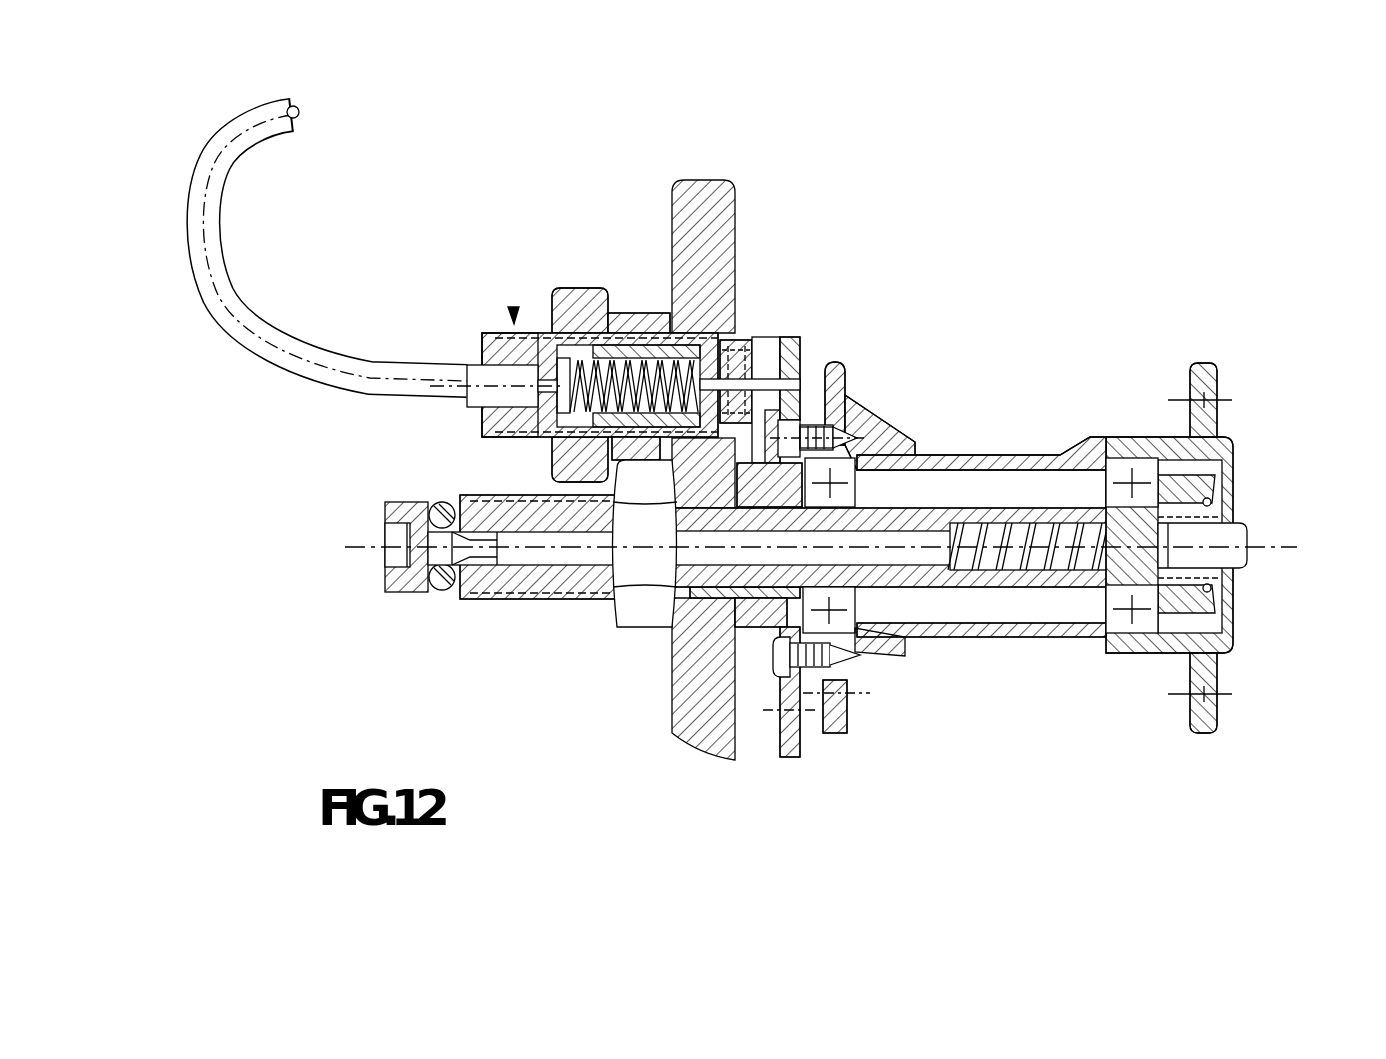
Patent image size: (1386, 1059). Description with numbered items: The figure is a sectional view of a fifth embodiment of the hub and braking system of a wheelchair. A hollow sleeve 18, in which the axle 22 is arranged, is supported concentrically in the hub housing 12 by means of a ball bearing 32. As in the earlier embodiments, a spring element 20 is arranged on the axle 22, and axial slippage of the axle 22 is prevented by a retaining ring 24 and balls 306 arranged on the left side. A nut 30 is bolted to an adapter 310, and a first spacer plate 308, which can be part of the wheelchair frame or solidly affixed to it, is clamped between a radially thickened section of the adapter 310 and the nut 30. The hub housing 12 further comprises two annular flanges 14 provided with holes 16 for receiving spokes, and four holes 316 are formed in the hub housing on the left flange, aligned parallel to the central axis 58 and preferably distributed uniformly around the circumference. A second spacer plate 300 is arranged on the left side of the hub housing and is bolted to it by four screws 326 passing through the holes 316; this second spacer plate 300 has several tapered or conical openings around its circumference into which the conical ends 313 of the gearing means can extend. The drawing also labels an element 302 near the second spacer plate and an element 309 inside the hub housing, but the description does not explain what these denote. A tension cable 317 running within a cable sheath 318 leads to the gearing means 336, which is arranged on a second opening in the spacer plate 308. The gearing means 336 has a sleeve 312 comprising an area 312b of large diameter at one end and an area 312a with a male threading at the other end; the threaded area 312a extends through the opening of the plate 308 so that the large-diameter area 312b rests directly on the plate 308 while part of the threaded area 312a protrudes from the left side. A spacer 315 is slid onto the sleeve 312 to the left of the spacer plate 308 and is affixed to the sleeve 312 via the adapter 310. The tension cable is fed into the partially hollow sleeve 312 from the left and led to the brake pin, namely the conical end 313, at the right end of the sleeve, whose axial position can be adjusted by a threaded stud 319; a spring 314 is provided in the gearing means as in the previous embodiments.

The hub housing 12 is at (1033, 457).
The annular flange 14 is at (1200, 366).
The hole 16 is at (842, 403).
The hollow sleeve 18 is at (1070, 575).
The spring element 20 is at (1023, 557).
The axle 22 is at (887, 553).
The retaining ring 24 is at (410, 568).
The nut 30 is at (642, 622).
The ball bearing 32 is at (1148, 470).
The central axis 58 is at (1263, 545).
The second spacer plate 300 is at (790, 757).
The mounting plate 302 is at (785, 717).
The ball 306 is at (437, 510).
The first spacer plate 308 is at (690, 718).
The spring 309 is at (1203, 483).
The adapter 310 is at (580, 293).
The sleeve 312 is at (742, 338).
The male-threaded area 312a is at (505, 330).
The large-diameter area 312b is at (750, 342).
The conical end 313 is at (785, 345).
The spring 314 is at (647, 360).
The spacer 315 is at (623, 320).
The hole 316 is at (822, 437).
The tension cable 317 is at (548, 382).
The cable sheath 318 is at (368, 362).
The threaded stud 319 is at (767, 380).
The screw 326 is at (782, 423).
The gearing means 336 is at (513, 312).